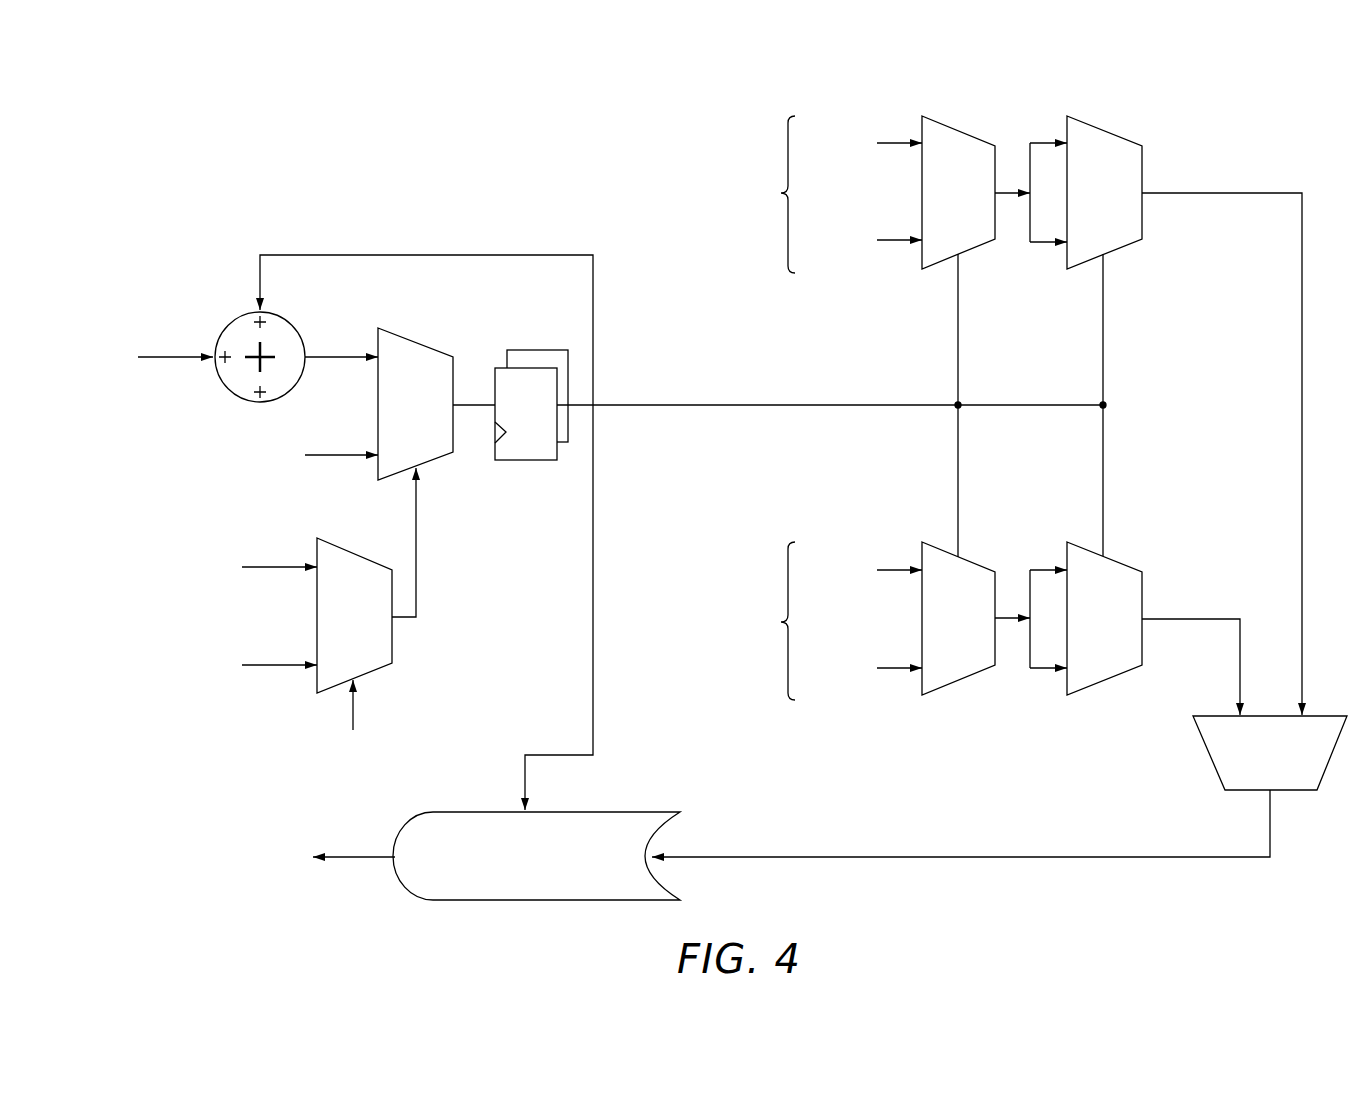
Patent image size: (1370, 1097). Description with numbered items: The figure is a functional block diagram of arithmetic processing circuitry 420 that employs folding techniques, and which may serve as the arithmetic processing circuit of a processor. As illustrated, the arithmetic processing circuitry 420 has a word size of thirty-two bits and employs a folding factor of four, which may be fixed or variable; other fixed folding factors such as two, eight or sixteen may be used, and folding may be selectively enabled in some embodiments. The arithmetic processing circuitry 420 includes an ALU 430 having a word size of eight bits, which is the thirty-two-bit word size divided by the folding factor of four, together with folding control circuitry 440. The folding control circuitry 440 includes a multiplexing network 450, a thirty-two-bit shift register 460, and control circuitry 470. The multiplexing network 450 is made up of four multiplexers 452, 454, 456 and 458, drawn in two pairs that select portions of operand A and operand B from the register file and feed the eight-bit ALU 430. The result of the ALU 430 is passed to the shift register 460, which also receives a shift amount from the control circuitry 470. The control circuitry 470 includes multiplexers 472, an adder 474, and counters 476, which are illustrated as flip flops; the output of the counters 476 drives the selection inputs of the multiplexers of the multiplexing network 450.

The arithmetic processing circuitry 420 is at (195, 180).
The ALU 430 is at (1207, 752).
The folding control circuitry 440 is at (163, 773).
The multiplexing network 450 is at (697, 240).
The multiplexer 452 is at (940, 690).
The multiplexer 454 is at (1142, 588).
The multiplexer 456 is at (958, 128).
The multiplexer 458 is at (1107, 128).
The 32-bit shift register 460 is at (470, 810).
The control circuitry 470 is at (183, 467).
The multiplexers 472 is at (432, 463).
The adder 474 is at (227, 318).
The counters 476 is at (540, 348).